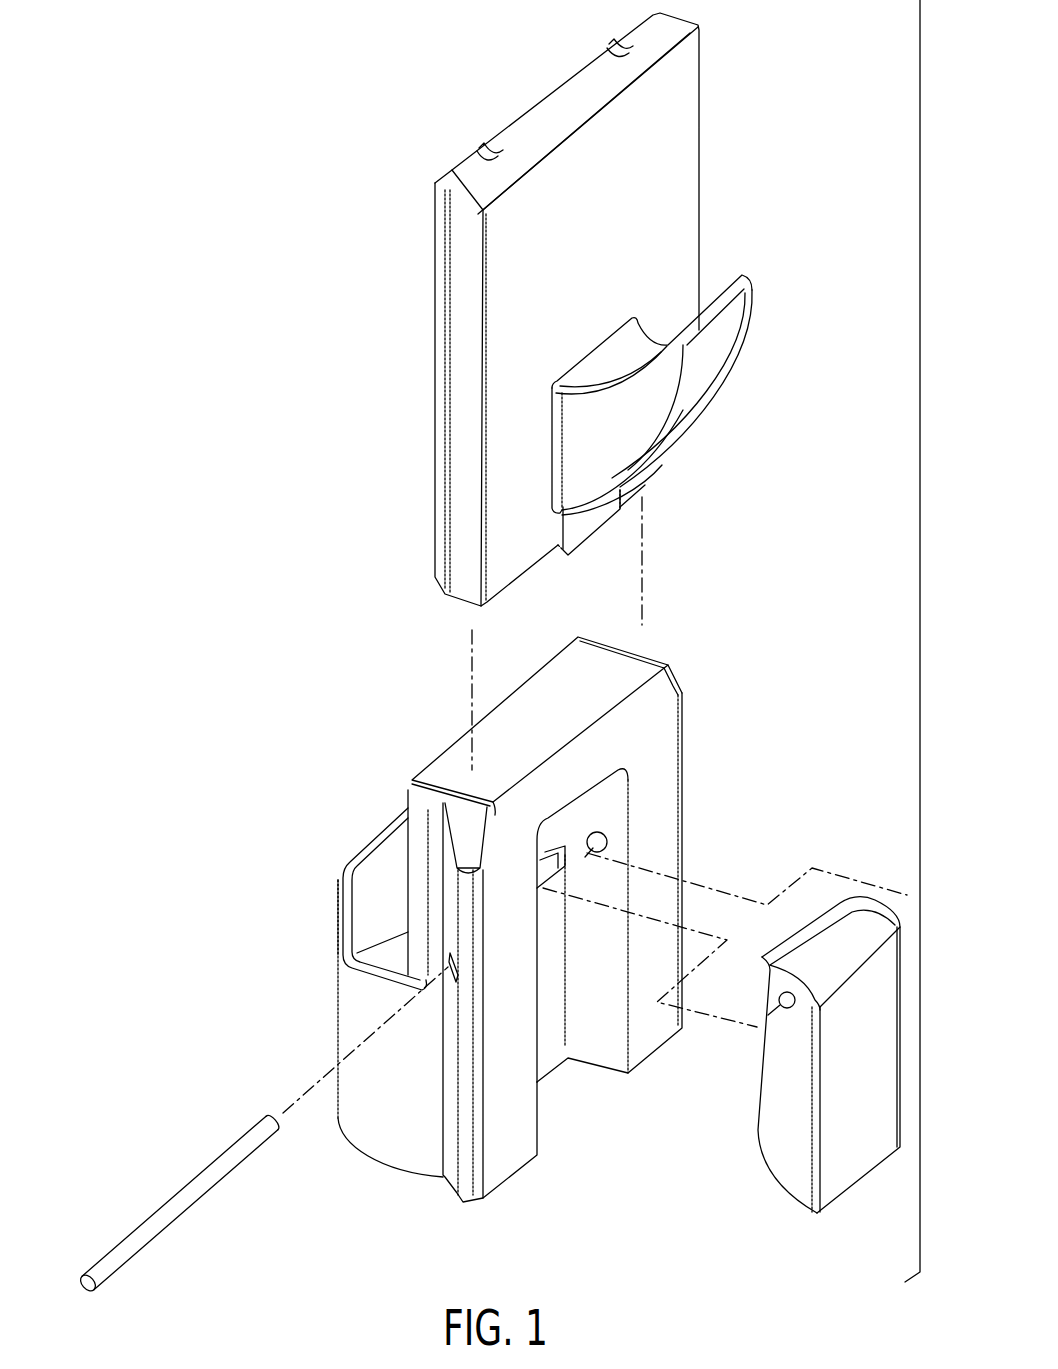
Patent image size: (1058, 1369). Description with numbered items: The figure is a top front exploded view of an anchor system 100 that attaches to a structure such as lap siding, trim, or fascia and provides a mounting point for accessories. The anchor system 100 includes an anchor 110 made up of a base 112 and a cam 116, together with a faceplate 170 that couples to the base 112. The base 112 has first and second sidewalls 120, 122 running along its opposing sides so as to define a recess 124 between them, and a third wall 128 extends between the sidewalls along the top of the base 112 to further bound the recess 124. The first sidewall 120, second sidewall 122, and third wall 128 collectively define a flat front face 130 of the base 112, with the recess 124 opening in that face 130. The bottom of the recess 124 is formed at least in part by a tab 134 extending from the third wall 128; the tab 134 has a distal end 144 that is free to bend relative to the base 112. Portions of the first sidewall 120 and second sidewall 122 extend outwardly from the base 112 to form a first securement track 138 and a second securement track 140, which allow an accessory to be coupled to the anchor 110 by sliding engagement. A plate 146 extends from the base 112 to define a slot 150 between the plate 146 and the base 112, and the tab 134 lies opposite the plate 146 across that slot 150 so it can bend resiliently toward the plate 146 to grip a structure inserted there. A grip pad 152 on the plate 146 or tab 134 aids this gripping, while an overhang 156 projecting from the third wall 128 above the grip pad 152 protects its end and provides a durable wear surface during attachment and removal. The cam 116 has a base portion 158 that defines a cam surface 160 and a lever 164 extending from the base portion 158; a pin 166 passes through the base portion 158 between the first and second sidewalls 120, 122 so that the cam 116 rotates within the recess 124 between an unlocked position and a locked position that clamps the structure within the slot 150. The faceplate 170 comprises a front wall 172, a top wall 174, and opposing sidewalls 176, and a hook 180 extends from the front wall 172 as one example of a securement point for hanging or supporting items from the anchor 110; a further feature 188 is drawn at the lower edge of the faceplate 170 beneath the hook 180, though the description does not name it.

The anchor system 100 is at (241, 232).
The anchor 110 is at (340, 812).
The base 112 is at (668, 745).
The cam 116 is at (866, 1057).
The first sidewall 120 is at (503, 1160).
The second sidewall 122 is at (667, 820).
The recess 124 is at (553, 1026).
The third wall 128 is at (553, 690).
The face 130 is at (683, 701).
The tab 134 is at (555, 833).
The first securement track 138 is at (465, 1175).
The second securement track 140 is at (685, 907).
The distal end 144 is at (543, 857).
The plate 146 is at (345, 908).
The slot 150 is at (375, 952).
The grip pad 152 is at (413, 832).
The overhang 156 is at (413, 793).
The base portion 158 is at (875, 922).
The cam surface 160 is at (825, 920).
The lever 164 is at (840, 1157).
The pin 166 is at (183, 1197).
The faceplate 170 is at (690, 95).
The front wall 172 is at (653, 210).
The top wall 174 is at (547, 117).
The sidewalls 176 is at (440, 400).
The hook 180 is at (738, 283).
The tab 188 is at (593, 520).